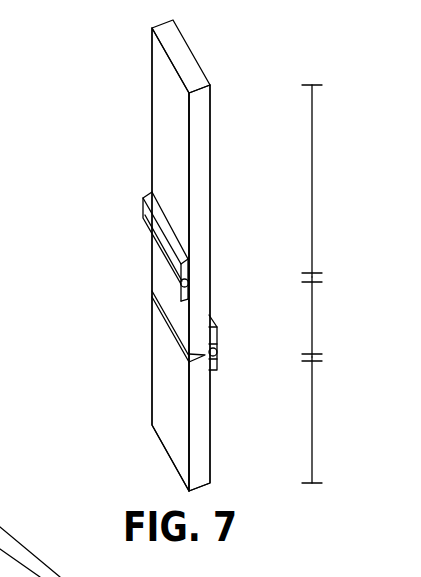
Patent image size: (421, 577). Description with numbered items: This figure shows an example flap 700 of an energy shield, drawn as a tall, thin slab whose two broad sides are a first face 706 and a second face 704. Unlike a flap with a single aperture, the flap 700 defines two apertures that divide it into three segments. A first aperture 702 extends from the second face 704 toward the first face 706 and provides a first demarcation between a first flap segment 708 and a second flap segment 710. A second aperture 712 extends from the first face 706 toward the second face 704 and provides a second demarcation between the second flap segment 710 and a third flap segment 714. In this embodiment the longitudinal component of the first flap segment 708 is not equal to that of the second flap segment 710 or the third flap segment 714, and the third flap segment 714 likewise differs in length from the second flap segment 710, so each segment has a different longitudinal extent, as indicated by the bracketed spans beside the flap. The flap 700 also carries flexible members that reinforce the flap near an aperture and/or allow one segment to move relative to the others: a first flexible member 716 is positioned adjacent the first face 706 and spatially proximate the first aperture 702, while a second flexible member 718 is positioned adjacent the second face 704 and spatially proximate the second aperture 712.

The flap 700 is at (106, 38).
The first aperture 702 is at (194, 283).
The second face 704 is at (230, 118).
The first face 706 is at (158, 115).
The first flap segment 708 is at (312, 187).
The second flap segment 710 is at (312, 317).
The second aperture 712 is at (138, 292).
The third flap segment 714 is at (312, 427).
The first flexible member 716 is at (143, 196).
The second flexible member 718 is at (217, 370).